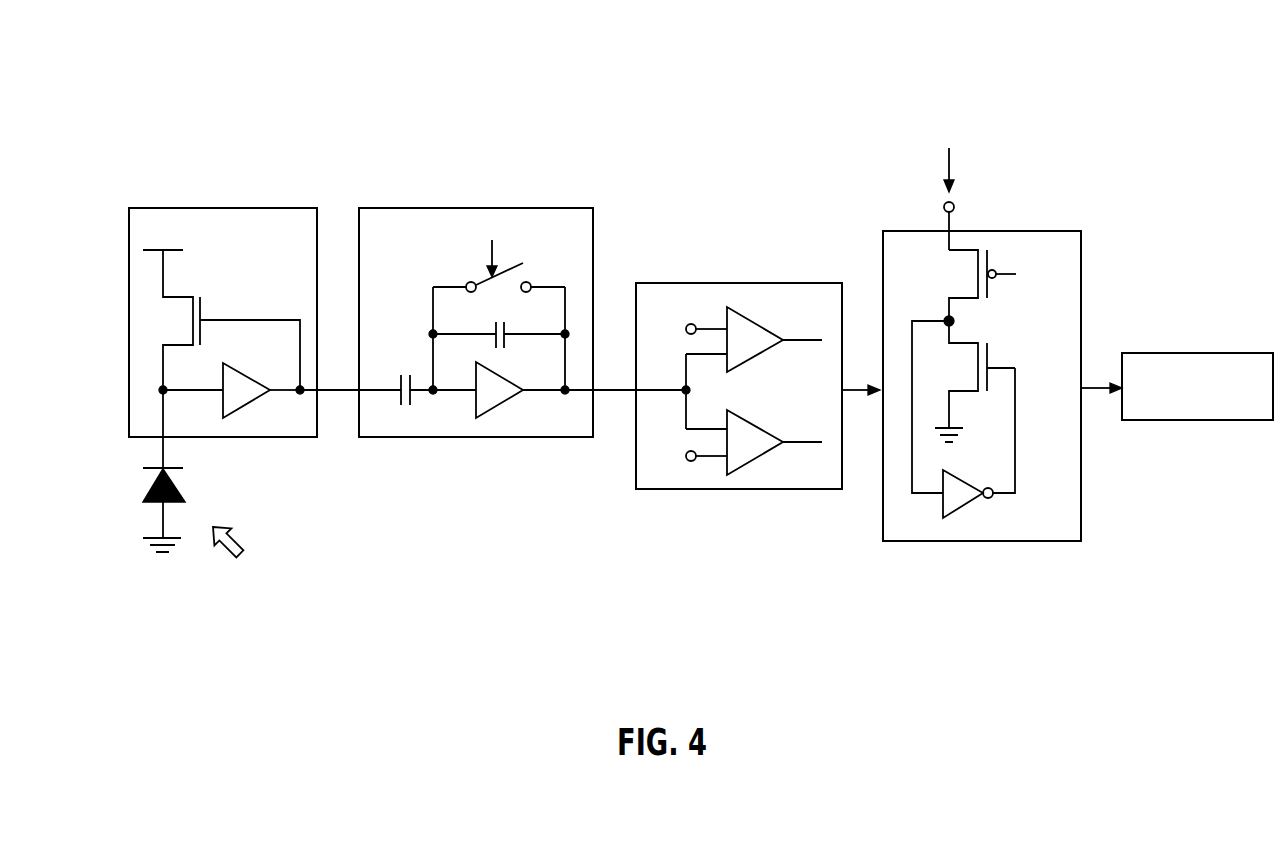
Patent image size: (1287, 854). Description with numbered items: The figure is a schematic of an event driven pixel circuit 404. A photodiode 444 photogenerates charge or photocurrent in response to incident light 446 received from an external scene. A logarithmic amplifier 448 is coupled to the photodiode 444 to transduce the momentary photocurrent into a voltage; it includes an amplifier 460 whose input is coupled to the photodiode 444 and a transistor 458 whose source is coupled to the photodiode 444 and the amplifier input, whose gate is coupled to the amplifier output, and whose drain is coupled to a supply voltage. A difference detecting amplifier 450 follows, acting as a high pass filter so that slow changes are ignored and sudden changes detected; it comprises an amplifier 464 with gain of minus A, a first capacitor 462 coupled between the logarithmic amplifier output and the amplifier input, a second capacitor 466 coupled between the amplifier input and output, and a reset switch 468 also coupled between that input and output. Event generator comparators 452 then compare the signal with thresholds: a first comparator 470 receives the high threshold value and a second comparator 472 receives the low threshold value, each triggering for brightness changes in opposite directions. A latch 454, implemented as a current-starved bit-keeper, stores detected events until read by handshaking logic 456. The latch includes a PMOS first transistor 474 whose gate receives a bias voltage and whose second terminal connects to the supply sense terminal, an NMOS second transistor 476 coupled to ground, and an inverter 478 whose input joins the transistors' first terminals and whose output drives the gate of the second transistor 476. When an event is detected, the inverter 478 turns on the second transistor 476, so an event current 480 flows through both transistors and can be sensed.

The event driven pixel circuit 404 is at (1273, 60).
The photodiode 444 is at (187, 488).
The incident light 446 is at (236, 538).
The logarithmic amplifier 448 is at (289, 207).
The difference detecting amplifier 450 is at (565, 207).
The event generator comparators 452 is at (807, 283).
The latch 454 is at (1047, 231).
The handshaking logic 456 is at (1238, 358).
The transistor 458 is at (203, 302).
The amplifier 460 is at (256, 381).
The first capacitor C1 462 is at (403, 372).
The amplifier 464 is at (512, 383).
The second capacitor C2 466 is at (508, 328).
The reset switch 468 is at (480, 281).
The first comparator 470 is at (760, 327).
The second comparator 472 is at (760, 431).
The first transistor 474 is at (968, 281).
The second transistor 476 is at (968, 365).
The inverter 478 is at (961, 487).
The event current IEVENT 480 is at (985, 170).